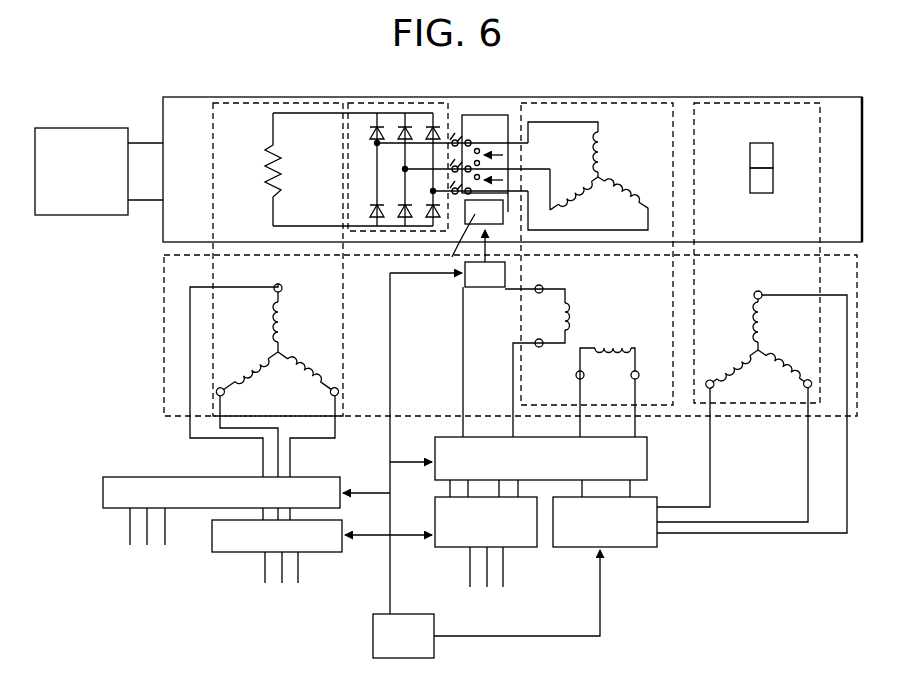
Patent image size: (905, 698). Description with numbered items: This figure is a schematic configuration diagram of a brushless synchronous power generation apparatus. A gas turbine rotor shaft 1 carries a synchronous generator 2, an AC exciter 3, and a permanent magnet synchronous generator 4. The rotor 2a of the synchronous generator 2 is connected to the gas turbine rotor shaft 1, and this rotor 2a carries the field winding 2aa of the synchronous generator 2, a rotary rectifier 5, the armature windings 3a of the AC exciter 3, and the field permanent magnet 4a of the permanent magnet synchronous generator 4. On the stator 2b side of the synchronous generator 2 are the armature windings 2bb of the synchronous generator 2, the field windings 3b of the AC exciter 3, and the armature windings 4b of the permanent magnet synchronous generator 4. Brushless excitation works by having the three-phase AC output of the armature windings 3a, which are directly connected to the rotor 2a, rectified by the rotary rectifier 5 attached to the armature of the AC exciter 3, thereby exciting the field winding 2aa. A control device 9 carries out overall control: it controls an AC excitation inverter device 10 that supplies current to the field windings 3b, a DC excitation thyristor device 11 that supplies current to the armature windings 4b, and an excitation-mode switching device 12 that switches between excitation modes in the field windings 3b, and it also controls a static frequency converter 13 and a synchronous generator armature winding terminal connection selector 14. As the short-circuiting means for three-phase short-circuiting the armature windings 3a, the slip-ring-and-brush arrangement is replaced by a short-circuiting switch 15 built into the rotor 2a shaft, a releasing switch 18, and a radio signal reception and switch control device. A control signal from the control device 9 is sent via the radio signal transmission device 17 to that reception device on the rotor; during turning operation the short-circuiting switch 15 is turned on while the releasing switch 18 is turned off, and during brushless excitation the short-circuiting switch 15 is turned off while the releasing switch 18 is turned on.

The gas turbine rotor shaft 1 is at (80, 138).
The synchronous generator 2 is at (253, 103).
The rotor 2a is at (162, 232).
The field winding 2aa is at (282, 162).
The stator 2b is at (165, 340).
The armature windings 2bb is at (281, 312).
The AC exciter 3 is at (665, 103).
The armature windings 3a is at (600, 146).
The field windings 3b is at (562, 310).
The permanent magnet synchronous generator 4 is at (780, 103).
The field permanent magnet 4a is at (772, 158).
The armature windings 4b is at (750, 318).
The rotary rectifier 5 is at (392, 103).
The control device 9 is at (385, 636).
The AC excitation inverter device 10 is at (442, 520).
The DC excitation thyristor device 11 is at (645, 508).
The excitation-mode switching device 12 is at (648, 456).
The static frequency converter 13 is at (320, 542).
The synchronous generator armature winding terminal connection selector 14 is at (316, 492).
The short-circuiting switch 15 is at (486, 156).
The radio signal transmission device 17 is at (463, 284).
The releasing switch 18 is at (457, 142).